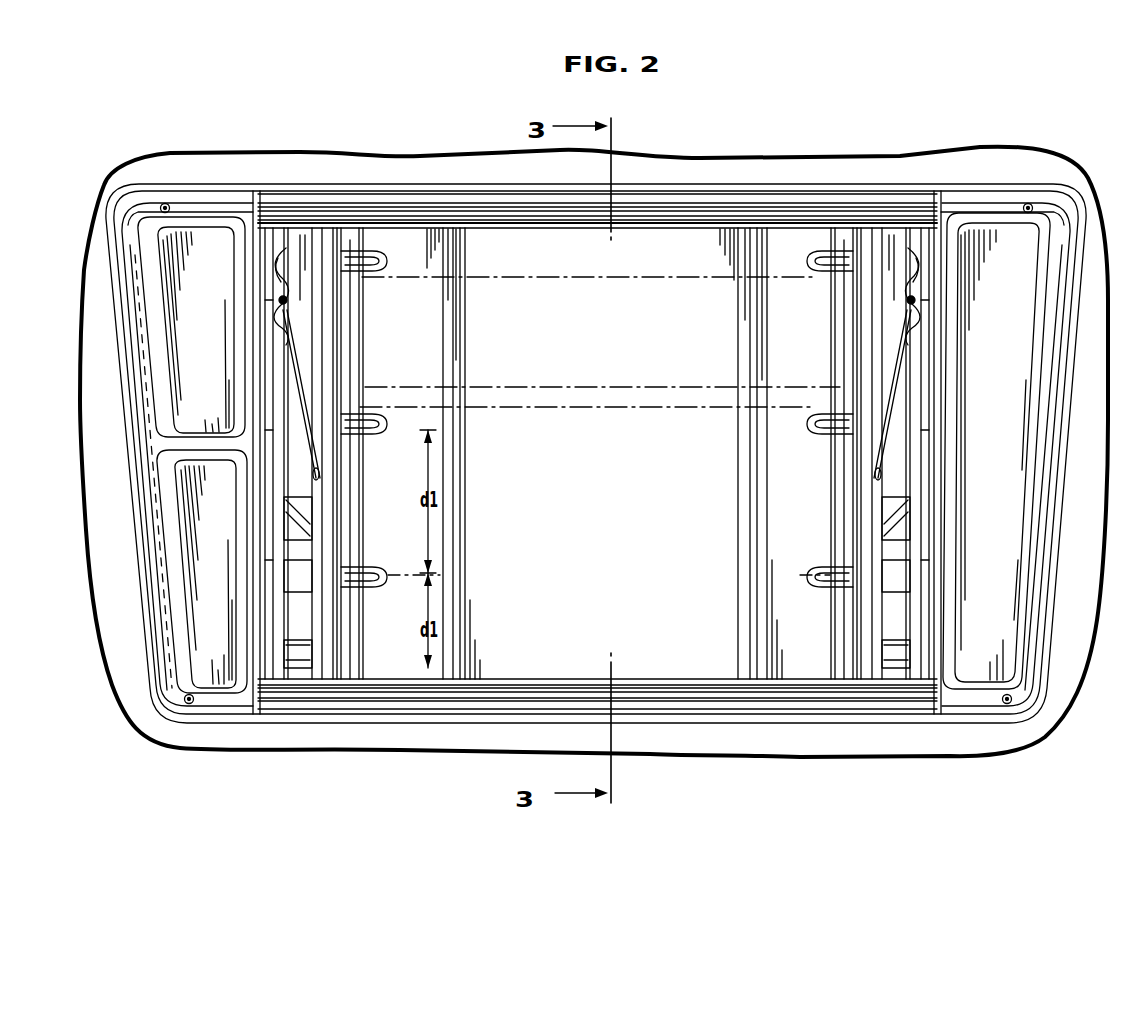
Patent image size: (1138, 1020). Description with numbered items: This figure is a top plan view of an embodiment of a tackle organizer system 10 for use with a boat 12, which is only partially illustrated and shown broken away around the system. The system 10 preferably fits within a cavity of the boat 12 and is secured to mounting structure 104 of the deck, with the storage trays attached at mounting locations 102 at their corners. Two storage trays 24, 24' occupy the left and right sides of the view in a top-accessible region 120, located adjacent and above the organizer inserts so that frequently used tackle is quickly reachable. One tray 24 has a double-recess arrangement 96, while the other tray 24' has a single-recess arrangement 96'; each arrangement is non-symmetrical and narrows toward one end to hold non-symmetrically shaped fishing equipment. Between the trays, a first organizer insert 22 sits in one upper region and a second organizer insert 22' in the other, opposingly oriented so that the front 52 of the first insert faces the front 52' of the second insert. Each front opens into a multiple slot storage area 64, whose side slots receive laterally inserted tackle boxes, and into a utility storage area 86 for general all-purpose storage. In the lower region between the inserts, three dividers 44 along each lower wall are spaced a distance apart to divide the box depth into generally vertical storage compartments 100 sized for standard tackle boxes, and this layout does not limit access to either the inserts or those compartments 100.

The tackle organizer system 10 is at (1089, 145).
The boat 12 is at (796, 170).
The first organizer insert 22 is at (341, 453).
The second organizer insert 22' is at (851, 453).
The storage tray 24 is at (191, 437).
The second storage tray 24' is at (1002, 414).
The dividers 44 is at (368, 262).
The front 52 is at (279, 419).
The front of second insert 52' is at (904, 395).
The multiple slot storage area 64 is at (310, 316).
The utility storage area 86 is at (310, 658).
The double-recess arrangement 96 is at (192, 455).
The single-recess arrangement 96' is at (996, 451).
The vertical storage compartments 100 is at (655, 345).
The mounting locations 102 is at (165, 204).
The mounting structure 104 is at (693, 208).
The top-accessible region 120 is at (223, 601).